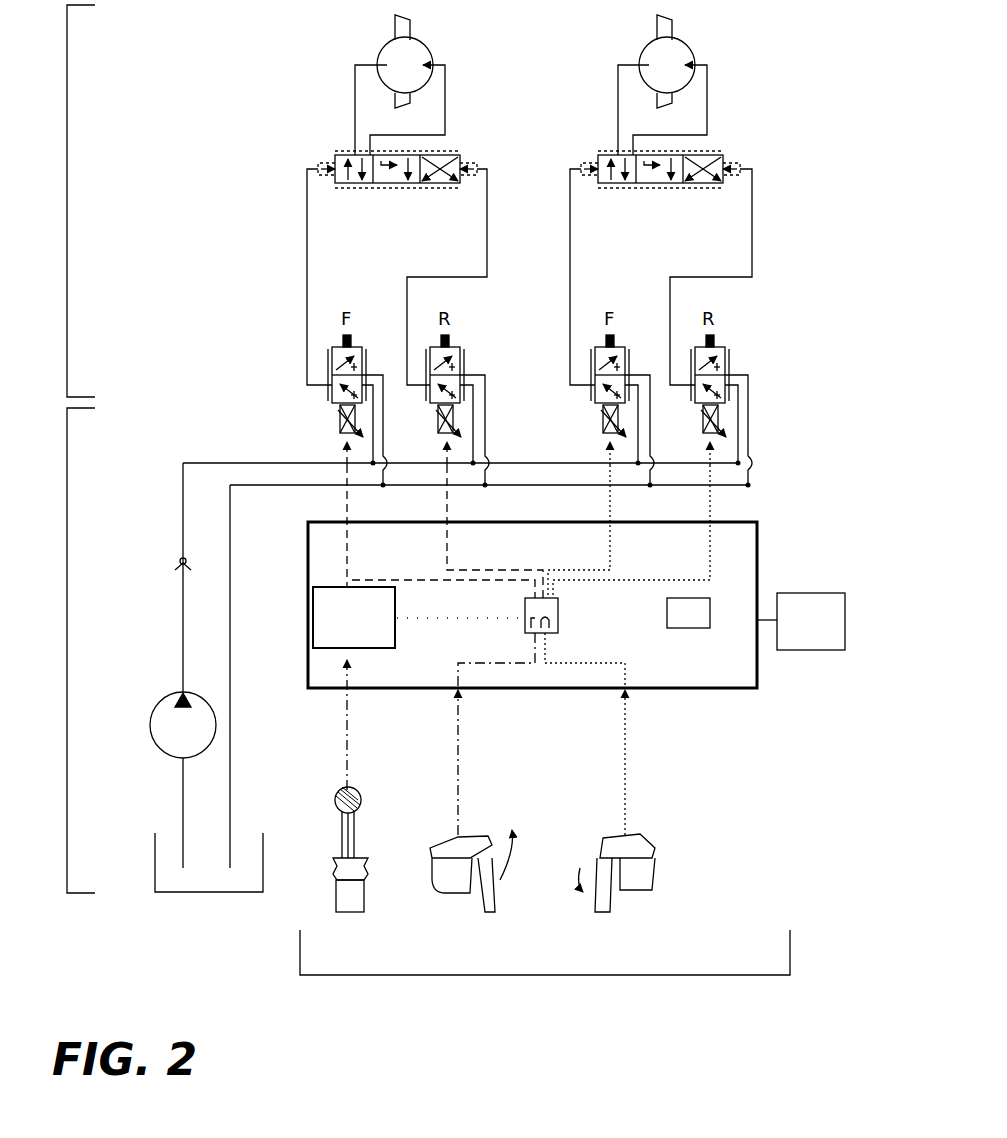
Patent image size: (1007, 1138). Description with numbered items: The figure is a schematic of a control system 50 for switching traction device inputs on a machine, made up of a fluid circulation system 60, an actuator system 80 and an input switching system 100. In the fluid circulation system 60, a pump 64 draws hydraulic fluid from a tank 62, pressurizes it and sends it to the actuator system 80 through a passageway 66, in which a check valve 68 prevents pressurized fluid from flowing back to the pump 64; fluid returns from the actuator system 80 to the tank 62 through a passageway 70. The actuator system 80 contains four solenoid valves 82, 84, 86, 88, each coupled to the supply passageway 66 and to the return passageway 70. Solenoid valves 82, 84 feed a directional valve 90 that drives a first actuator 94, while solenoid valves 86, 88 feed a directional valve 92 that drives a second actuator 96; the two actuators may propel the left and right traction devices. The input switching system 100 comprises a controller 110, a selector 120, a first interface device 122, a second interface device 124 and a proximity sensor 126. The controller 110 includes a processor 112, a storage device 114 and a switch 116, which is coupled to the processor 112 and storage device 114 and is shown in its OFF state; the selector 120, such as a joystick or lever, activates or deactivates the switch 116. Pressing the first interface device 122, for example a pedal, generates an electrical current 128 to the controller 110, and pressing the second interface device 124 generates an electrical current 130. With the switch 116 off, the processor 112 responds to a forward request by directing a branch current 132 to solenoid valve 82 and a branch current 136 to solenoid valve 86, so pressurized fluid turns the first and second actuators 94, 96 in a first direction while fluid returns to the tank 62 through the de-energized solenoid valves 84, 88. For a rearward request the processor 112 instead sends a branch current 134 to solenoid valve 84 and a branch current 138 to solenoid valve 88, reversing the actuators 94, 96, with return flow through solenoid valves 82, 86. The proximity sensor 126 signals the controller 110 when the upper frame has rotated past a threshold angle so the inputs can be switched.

The control system 50 is at (185, 122).
The fluid circulation system 60 is at (67, 680).
The tank 62 is at (203, 893).
The pump 64 is at (168, 735).
The passageway 66 is at (183, 634).
The check valve 68 is at (178, 566).
The passageway 70 is at (230, 758).
The actuator system 80 is at (67, 208).
The solenoid valve 82 is at (332, 361).
The solenoid valve 84 is at (462, 365).
The solenoid valve 86 is at (612, 355).
The solenoid valve 88 is at (716, 355).
The directional valve 90 is at (387, 188).
The directional valve 92 is at (650, 188).
The first actuator 94 is at (378, 52).
The second actuator 96 is at (697, 52).
The input switching system 100 is at (712, 976).
The controller 110 is at (737, 690).
The processor 112 is at (559, 612).
The storage device 114 is at (688, 613).
The switch 116 is at (388, 630).
The selector 120 is at (362, 797).
The first interface device 122 is at (458, 890).
The second interface device 124 is at (653, 880).
The proximity sensor 126 is at (801, 621).
The electrical current 128 is at (460, 765).
The electrical current 130 is at (627, 765).
The branch current 132 is at (347, 503).
The branch current 134 is at (452, 500).
The branch current 136 is at (615, 548).
The branch current 138 is at (713, 503).